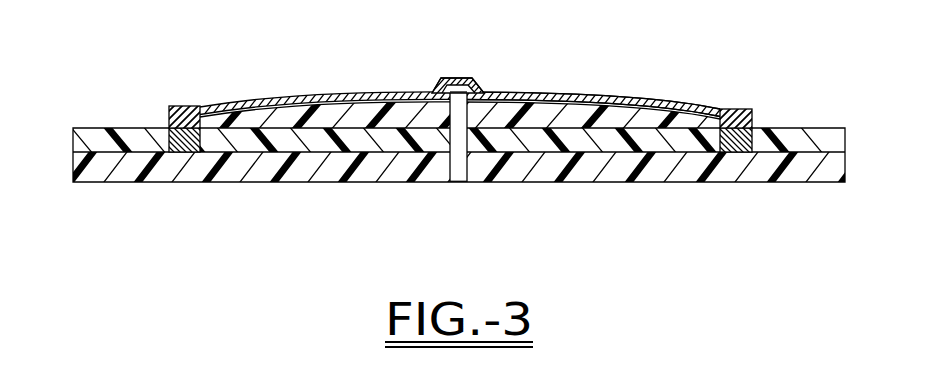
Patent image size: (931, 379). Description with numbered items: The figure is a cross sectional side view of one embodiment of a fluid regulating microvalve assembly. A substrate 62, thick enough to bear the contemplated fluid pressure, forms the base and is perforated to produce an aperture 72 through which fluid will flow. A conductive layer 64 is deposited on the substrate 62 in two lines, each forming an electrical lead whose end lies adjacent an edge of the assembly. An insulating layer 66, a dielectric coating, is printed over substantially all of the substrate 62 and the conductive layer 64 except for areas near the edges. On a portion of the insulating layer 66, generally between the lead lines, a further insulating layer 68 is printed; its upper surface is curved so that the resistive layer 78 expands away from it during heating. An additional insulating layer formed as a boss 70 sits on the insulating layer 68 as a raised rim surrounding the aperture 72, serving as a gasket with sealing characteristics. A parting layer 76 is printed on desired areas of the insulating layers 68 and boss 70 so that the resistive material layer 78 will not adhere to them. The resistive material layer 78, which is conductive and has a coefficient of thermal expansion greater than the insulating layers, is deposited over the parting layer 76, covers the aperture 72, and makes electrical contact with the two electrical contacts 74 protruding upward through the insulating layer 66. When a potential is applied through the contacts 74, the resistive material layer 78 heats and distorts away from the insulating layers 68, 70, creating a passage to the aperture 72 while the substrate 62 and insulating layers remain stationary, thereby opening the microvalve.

The substrate 62 is at (115, 182).
The conductive layer 64 is at (175, 153).
The insulating layer 66 is at (122, 128).
The insulating layer 68 is at (320, 106).
The boss 70 is at (433, 92).
The aperture 72 is at (458, 182).
The electrical contacts 74 is at (190, 106).
The parting layer 76 is at (560, 94).
The resistive material layer 78 is at (640, 99).